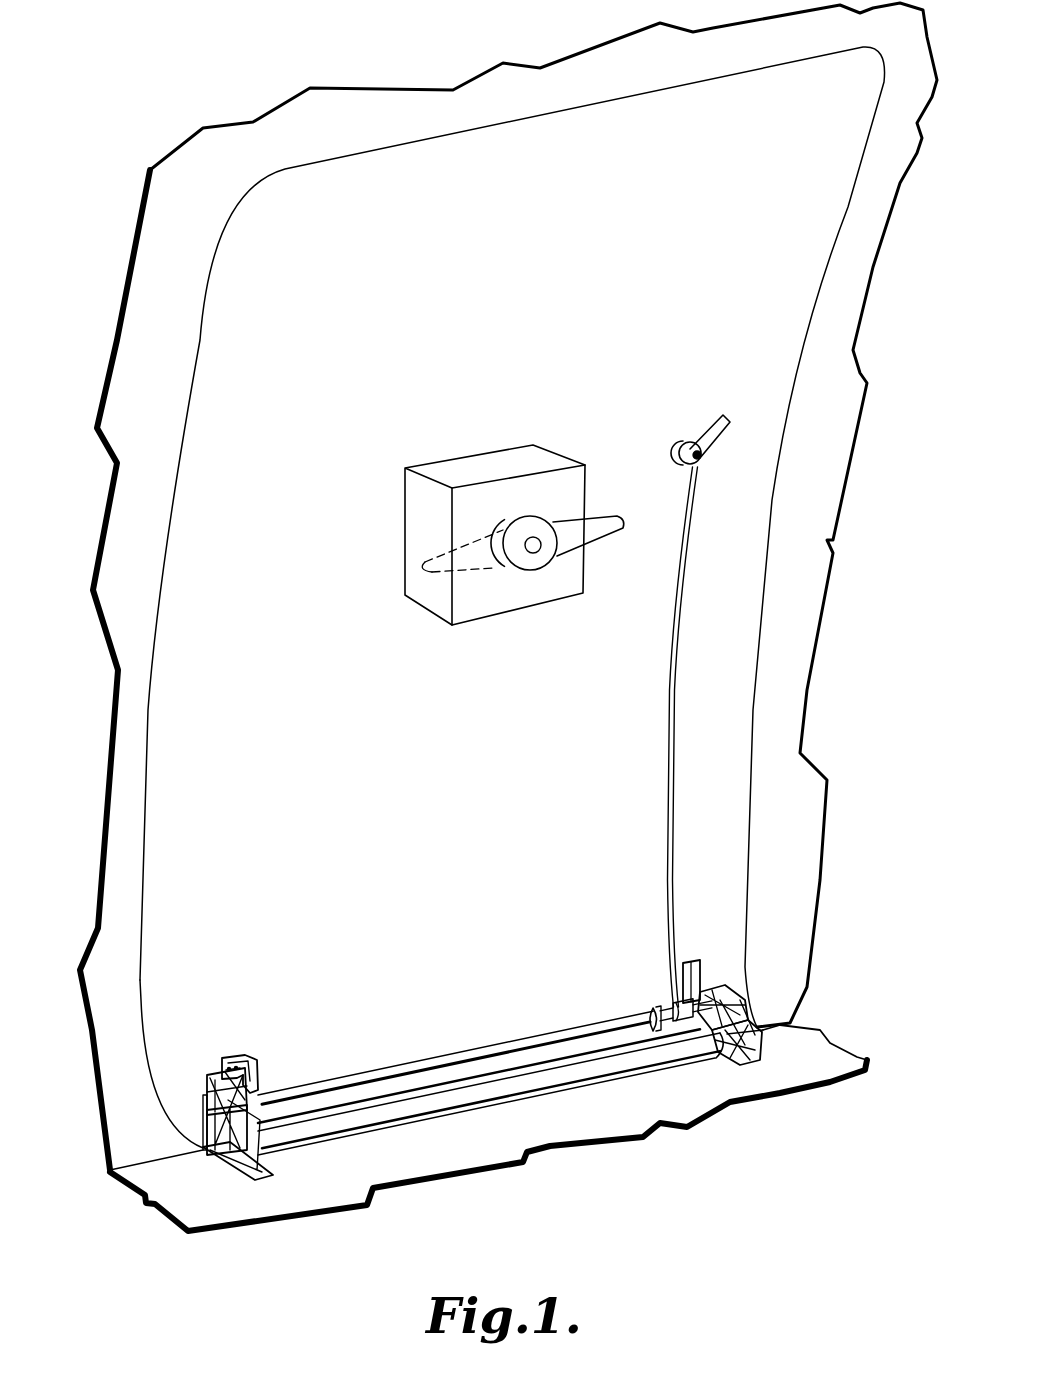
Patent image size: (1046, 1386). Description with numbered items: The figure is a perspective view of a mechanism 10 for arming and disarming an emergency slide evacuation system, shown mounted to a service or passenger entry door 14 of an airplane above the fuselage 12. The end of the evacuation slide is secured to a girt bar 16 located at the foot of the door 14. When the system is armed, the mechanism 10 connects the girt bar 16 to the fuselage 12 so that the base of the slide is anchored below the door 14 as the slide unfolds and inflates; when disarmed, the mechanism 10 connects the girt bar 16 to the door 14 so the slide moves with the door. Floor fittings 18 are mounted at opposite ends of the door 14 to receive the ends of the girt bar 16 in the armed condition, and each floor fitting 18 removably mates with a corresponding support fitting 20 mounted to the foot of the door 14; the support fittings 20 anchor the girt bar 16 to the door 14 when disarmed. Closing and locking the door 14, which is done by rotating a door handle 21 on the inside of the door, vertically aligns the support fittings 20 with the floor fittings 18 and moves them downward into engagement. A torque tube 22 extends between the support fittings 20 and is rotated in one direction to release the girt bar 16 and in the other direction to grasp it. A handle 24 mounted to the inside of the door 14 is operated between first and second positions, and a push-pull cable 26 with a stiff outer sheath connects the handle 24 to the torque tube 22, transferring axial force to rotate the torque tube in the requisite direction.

The mechanism 10 is at (742, 684).
The fuselage 12 is at (217, 1220).
The door 14 is at (533, 302).
The girt bar 16 is at (553, 1090).
The floor fittings 18 is at (260, 1172).
The support fittings 20 is at (288, 1057).
The door handle 21 is at (613, 533).
The torque tube 22 is at (472, 1048).
The handle 24 is at (707, 437).
The push-pull cable 26 is at (667, 743).